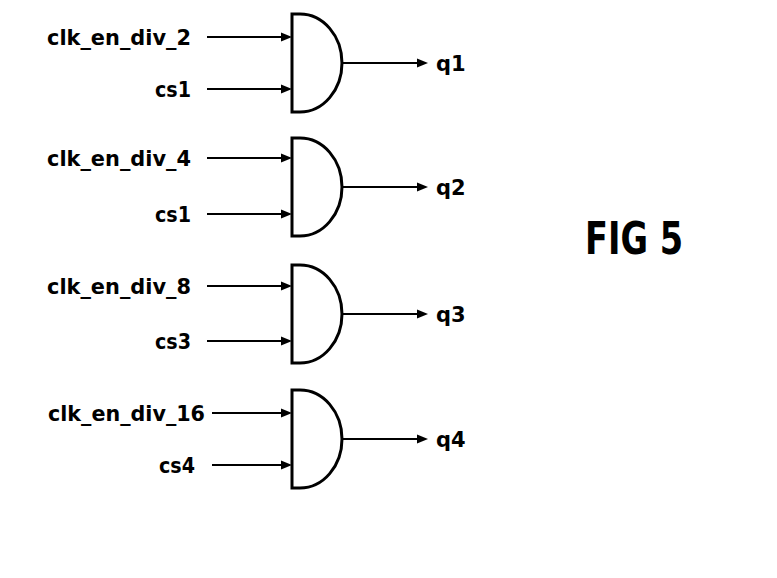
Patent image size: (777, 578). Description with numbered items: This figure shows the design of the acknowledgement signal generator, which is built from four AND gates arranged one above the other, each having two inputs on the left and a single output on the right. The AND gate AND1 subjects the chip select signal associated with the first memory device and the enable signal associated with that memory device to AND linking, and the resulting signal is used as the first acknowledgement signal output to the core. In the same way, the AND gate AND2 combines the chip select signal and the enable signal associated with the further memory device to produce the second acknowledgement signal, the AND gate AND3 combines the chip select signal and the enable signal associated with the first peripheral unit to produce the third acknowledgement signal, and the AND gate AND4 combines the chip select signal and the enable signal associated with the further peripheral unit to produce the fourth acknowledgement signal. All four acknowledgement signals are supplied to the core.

The AND gate AND1 is at (317, 63).
The AND gate AND2 is at (317, 187).
The AND gate AND3 is at (317, 314).
The AND gate AND4 is at (317, 439).